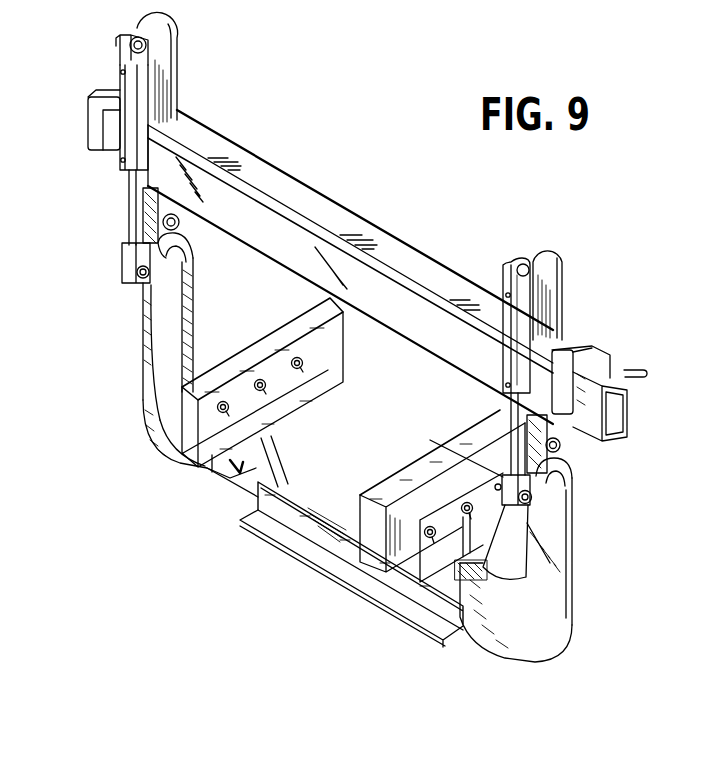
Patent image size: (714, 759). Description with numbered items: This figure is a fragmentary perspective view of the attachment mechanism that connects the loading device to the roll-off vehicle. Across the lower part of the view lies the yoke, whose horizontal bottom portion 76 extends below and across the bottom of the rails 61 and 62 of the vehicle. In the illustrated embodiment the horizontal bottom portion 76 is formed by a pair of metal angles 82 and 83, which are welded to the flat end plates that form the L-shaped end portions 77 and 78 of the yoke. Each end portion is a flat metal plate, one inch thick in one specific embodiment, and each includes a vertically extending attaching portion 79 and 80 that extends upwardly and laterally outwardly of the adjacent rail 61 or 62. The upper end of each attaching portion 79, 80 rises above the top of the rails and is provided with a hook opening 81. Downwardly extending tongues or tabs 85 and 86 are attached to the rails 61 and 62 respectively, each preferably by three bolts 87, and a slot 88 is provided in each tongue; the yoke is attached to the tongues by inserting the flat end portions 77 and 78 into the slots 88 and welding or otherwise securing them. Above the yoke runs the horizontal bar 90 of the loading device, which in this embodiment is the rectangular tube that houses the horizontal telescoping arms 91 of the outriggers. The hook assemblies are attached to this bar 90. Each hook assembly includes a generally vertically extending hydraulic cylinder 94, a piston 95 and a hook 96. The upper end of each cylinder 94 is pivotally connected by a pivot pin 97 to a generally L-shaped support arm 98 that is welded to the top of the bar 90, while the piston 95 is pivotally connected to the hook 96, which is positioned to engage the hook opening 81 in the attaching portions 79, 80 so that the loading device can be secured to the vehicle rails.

The rail 61 is at (317, 352).
The rail 62 is at (422, 458).
The horizontal bottom portion 76 is at (317, 573).
The L-shaped end portion 77 is at (157, 387).
The L-shaped end portion 78 is at (533, 640).
The attaching portion 79 is at (143, 340).
The attaching portion 80 is at (550, 583).
The hook opening 81 is at (177, 273).
The metal angle 82 is at (280, 550).
The metal angle 83 is at (337, 502).
The tongue 85 is at (230, 468).
The tongue 86 is at (437, 565).
The bolt 87 is at (217, 411).
The slot 88 is at (228, 470).
The horizontal bar 90 is at (372, 232).
The horizontal telescoping arm 91 is at (92, 127).
The hydraulic cylinder 94 is at (122, 80).
The piston 95 is at (128, 200).
The hook 96 is at (142, 283).
The pivot pin 97 is at (180, 33).
The support arm 98 is at (173, 72).